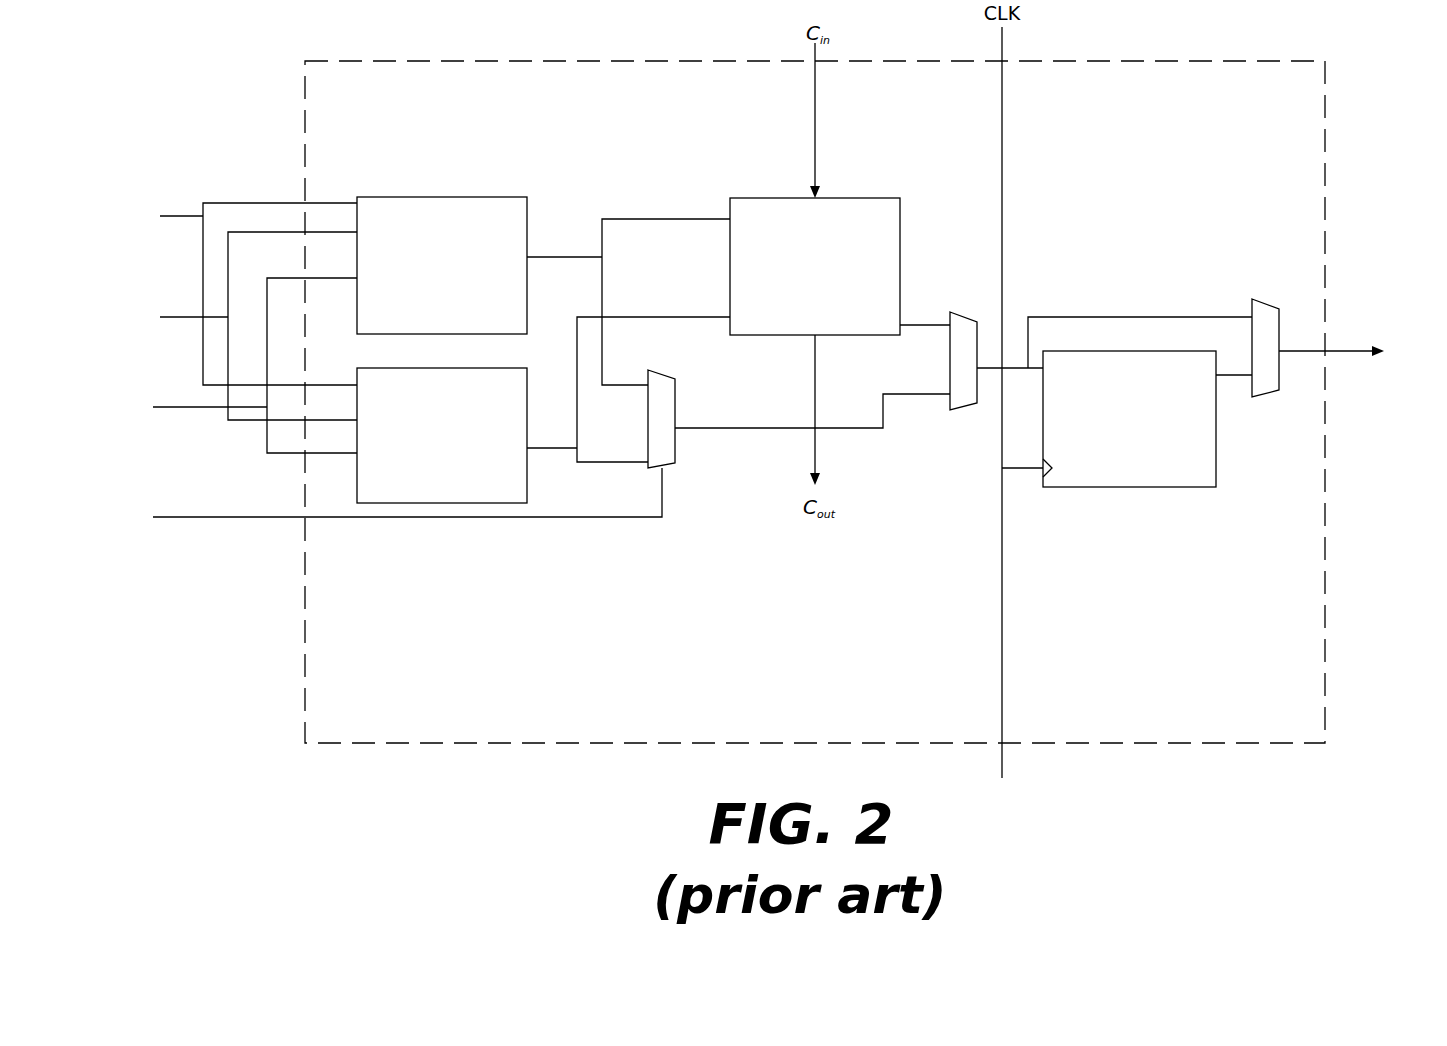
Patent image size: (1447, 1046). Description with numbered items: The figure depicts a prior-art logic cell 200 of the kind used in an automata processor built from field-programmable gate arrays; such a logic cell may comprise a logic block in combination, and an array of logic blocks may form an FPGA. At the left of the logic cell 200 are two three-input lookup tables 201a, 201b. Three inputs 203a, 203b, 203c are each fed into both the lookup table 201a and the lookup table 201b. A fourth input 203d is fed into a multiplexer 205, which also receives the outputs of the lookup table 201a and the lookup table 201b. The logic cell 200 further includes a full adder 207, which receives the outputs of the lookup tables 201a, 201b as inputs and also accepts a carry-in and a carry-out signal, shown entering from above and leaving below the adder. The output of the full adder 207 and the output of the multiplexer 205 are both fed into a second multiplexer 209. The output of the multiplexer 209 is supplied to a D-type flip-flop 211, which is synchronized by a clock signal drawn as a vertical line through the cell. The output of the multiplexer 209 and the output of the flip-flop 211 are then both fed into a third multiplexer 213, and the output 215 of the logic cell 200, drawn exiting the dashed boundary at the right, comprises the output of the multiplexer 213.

The logic cell 200 is at (1325, 84).
The 3-input lookup table 201a is at (442, 265).
The 3-input lookup table 201b is at (442, 435).
The input 203a is at (231, 294).
The input 203b is at (231, 326).
The input 203c is at (231, 365).
The input 203d is at (383, 497).
The multiplexer 205 is at (675, 405).
The full adder 207 is at (815, 266).
The multiplexer 209 is at (966, 412).
The D-type flip-flop 211 is at (1129, 419).
The multiplexer 213 is at (1266, 397).
The output 215 is at (1355, 352).